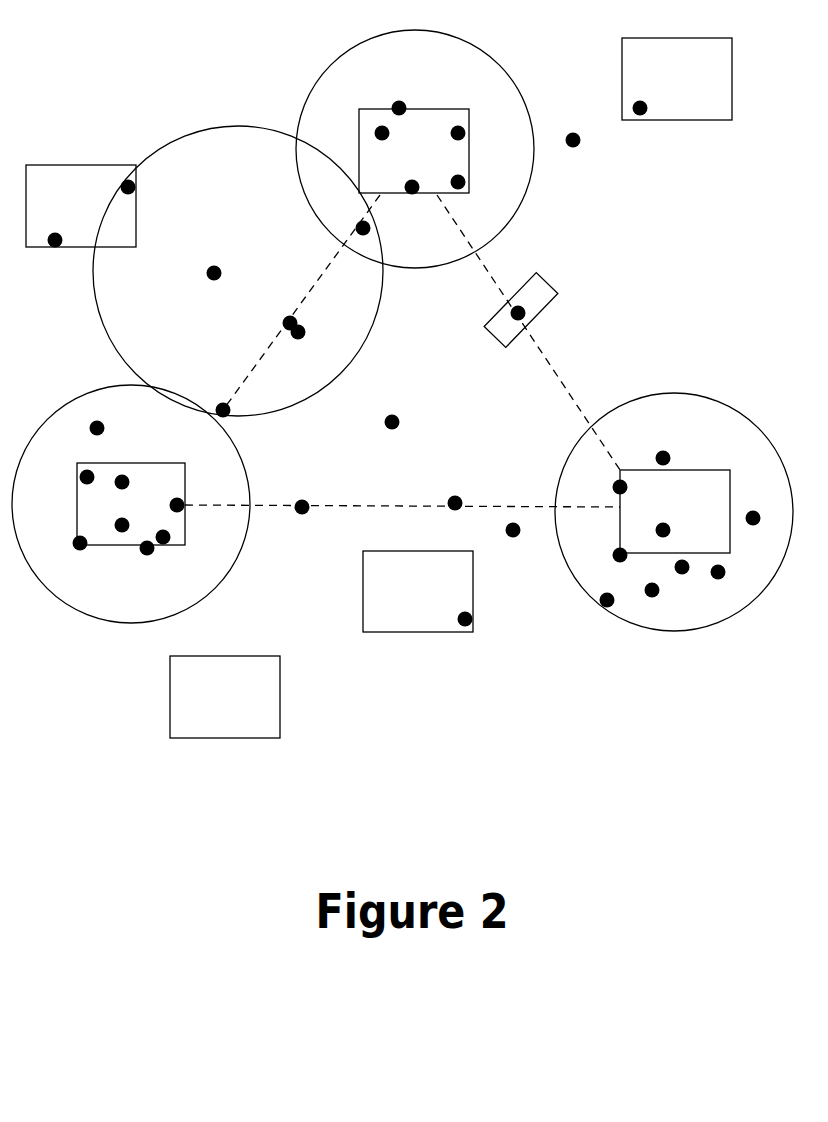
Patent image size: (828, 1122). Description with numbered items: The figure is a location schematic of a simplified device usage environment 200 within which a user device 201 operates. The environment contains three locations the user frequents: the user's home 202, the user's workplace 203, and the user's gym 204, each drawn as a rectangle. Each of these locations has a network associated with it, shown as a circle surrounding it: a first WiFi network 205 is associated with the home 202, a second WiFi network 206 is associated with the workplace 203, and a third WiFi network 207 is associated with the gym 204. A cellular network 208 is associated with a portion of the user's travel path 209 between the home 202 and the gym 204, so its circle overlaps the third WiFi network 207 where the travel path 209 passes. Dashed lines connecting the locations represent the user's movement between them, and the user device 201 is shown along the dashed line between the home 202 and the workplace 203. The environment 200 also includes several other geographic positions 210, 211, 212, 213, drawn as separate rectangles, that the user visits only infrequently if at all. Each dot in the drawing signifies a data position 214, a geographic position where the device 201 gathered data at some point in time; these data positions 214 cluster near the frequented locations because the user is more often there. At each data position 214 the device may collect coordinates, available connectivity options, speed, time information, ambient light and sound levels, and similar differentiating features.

The device usage environment 200 is at (264, 50).
The user device 201 is at (547, 283).
The user's home 202 is at (396, 164).
The user's workplace 203 is at (656, 526).
The user's gym 204 is at (111, 517).
The first WiFi network 205 is at (396, 74).
The second WiFi network 206 is at (658, 436).
The third WiFi network 207 is at (113, 427).
The cellular network 208 is at (219, 166).
The travel path 209 is at (203, 438).
The geographic position 210 is at (399, 602).
The geographic position 211 is at (206, 709).
The geographic position 212 is at (61, 217).
The geographic position 213 is at (657, 91).
The data position 214 is at (506, 538).